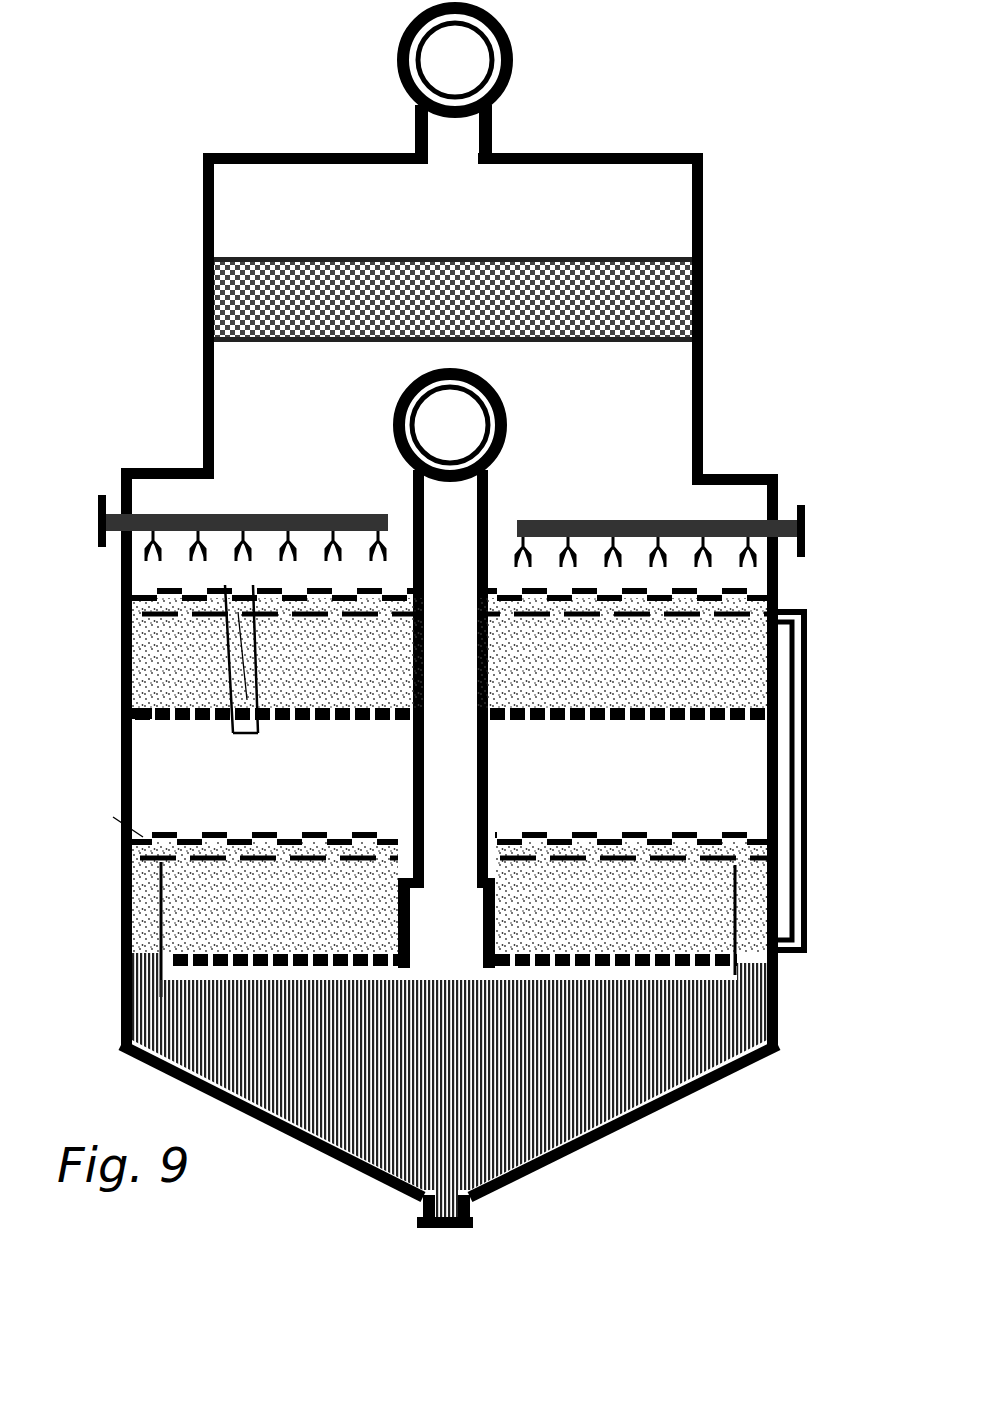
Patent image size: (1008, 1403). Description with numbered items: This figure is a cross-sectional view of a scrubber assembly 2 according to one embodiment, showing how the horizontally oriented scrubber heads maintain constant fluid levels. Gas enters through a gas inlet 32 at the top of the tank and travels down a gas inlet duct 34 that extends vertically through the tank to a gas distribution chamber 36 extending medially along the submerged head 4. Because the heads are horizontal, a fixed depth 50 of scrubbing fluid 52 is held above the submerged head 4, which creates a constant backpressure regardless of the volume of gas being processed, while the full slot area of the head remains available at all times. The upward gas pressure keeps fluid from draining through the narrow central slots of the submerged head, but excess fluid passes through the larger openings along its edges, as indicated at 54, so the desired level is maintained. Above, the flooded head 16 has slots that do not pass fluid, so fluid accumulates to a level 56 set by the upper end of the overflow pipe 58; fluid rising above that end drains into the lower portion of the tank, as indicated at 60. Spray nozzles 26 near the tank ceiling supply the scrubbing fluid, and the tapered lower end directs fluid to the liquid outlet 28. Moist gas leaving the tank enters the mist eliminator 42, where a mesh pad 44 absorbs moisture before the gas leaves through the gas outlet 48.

The water treatment apparatus 2 is at (167, 352).
The submerged head 4 is at (142, 955).
The flooded head 16 is at (122, 692).
The spray nozzles 26 is at (755, 553).
The liquid outlet 28 is at (420, 1227).
The gas inlet 32 is at (448, 430).
The gas inlet duct 34 is at (450, 676).
The gas distribution chamber 36 is at (446, 923).
The mist eliminator 42 is at (705, 218).
The mesh pad 44 is at (680, 303).
The gas outlet 48 is at (455, 84).
The fixed depth 50 is at (840, 963).
The scrubbing fluid 52 is at (147, 888).
The edge openings of submerged head 54 is at (755, 967).
The fluid level above flooded head 56 is at (813, 597).
The overflow pipe 58 is at (258, 733).
The drainage of fluid through overflow pipe 60 is at (237, 612).